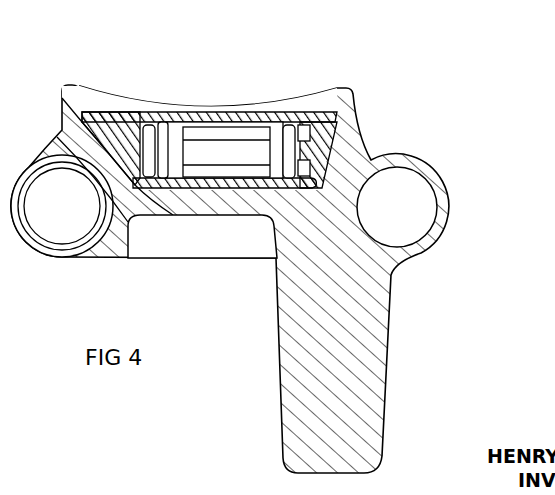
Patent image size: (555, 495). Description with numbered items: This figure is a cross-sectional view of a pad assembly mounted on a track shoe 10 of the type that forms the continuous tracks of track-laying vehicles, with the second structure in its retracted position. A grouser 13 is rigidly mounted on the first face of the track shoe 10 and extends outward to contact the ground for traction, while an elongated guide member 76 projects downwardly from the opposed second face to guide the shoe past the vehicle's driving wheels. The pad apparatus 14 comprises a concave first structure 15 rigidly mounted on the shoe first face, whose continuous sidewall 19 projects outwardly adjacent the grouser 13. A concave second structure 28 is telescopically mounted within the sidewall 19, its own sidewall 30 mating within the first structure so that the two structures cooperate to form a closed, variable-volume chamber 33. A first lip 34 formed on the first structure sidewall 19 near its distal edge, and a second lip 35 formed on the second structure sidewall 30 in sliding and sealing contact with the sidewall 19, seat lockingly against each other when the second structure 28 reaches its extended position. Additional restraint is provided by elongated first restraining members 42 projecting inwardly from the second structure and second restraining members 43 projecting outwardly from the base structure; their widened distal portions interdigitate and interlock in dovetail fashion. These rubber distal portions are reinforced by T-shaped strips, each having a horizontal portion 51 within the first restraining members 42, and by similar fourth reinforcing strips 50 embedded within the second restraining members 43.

The track shoe 10 is at (449, 190).
The grouser 13 is at (73, 85).
The pad apparatus 14 is at (211, 129).
The first structure 15 is at (113, 112).
The sidewall 19 is at (310, 115).
The second structure 28 is at (215, 111).
The second structure sidewall 30 is at (105, 200).
The variable-volume chamber 33 is at (222, 152).
The first lip 34 is at (136, 112).
The second lip 35 is at (126, 205).
The first restraining member 42 is at (176, 186).
The second restraining member 43 is at (272, 187).
The fourth reinforcing strip 50 is at (293, 115).
The horizontal portion 51 is at (160, 130).
The guide member 76 is at (391, 327).